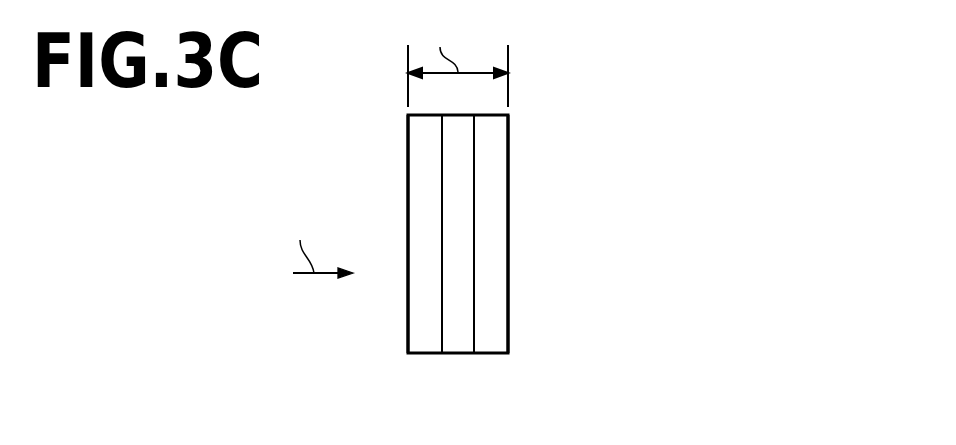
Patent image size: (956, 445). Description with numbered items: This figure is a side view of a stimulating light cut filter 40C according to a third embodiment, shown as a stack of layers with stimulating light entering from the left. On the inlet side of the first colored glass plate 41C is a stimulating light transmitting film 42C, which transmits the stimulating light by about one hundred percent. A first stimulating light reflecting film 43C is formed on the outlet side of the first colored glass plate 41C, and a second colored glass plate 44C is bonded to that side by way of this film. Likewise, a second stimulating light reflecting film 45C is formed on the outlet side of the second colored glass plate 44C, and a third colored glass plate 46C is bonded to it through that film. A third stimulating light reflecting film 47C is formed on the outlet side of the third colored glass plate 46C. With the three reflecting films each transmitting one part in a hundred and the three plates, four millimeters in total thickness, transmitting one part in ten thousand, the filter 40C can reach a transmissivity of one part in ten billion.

The stimulating light cut filter 40C is at (554, 216).
The first colored glass plate 41C is at (427, 356).
The stimulating light transmitting film 42C is at (408, 172).
The first stimulating light reflecting film 43C is at (443, 174).
The second colored glass plate 44C is at (467, 356).
The second stimulating light reflecting film 45C is at (475, 233).
The third colored glass plate 46C is at (500, 358).
The third stimulating light reflecting film 47C is at (508, 273).